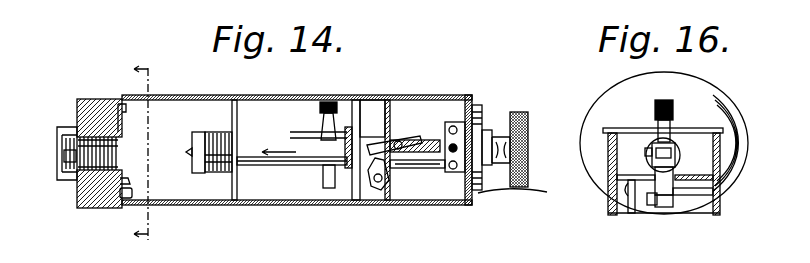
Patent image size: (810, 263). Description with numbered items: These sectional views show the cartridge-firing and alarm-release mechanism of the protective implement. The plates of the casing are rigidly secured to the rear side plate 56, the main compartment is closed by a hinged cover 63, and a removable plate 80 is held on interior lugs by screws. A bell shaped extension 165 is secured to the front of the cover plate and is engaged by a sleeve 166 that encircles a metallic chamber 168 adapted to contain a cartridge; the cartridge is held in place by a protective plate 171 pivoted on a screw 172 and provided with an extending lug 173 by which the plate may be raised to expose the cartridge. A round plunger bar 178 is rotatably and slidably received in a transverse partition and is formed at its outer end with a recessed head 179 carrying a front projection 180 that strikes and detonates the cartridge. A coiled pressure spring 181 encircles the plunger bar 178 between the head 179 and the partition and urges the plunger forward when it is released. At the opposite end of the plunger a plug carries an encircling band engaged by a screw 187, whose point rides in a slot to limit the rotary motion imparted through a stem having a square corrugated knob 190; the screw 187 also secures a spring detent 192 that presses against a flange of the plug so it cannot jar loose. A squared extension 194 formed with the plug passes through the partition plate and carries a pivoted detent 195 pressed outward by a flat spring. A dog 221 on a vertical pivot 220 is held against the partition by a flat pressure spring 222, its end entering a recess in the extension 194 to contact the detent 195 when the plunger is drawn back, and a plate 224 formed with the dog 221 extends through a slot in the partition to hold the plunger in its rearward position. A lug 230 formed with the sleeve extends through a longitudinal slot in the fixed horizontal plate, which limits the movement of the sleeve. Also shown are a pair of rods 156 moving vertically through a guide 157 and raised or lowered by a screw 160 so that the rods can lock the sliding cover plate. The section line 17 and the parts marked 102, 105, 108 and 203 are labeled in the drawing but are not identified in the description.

In FIG. 14, the section line 17- 17 is at (153, 154).
In FIG. 14, the rear side plate 56 is at (176, 96).
In FIG. 16, the cover 63 is at (608, 196).
In FIG. 16, the removable plate 80 is at (631, 214).
In FIG. 14, the cord 102 is at (528, 190).
In FIG. 14, the knurled knob 105 is at (522, 118).
In FIG. 16, the screw head 108 is at (655, 107).
In FIG. 14, the rods 156 is at (470, 118).
In FIG. 14, the guide 157 is at (490, 135).
In FIG. 14, the screw 160 is at (450, 123).
In FIG. 16, the bell shaped extension 165 is at (722, 96).
In FIG. 14, the sleeve 166 is at (62, 128).
In FIG. 14, the metallic chamber 168 is at (74, 150).
In FIG. 14, the protective plate 171 is at (120, 205).
In FIG. 14, the screw 172 is at (122, 104).
In FIG. 14, the extending lug 173 is at (126, 198).
In FIG. 14, the plunger bar 178 is at (268, 172).
In FIG. 14, the recessed head 179 is at (200, 132).
In FIG. 14, the front projection 180 is at (186, 153).
In FIG. 14, the coiled pressure spring 181 is at (228, 132).
In FIG. 14, the screw 187 is at (304, 166).
In FIG. 14, the square corrugated knob 190 is at (330, 102).
In FIG. 14, the spring detent 192 is at (372, 190).
In FIG. 16, the spring detent 192 is at (645, 152).
In FIG. 16, the squared extension 194 is at (678, 145).
In FIG. 14, the detent 195 is at (404, 140).
In FIG. 16, the nut 203 is at (652, 205).
In FIG. 16, the vertical pivot 220 is at (695, 196).
In FIG. 14, the dog 221 is at (376, 190).
In FIG. 14, the flat pressure spring 222 is at (381, 182).
In FIG. 14, the plate 224 is at (404, 168).
In FIG. 14, the lug 230 is at (348, 168).
In FIG. 16, the lug 230 is at (736, 190).